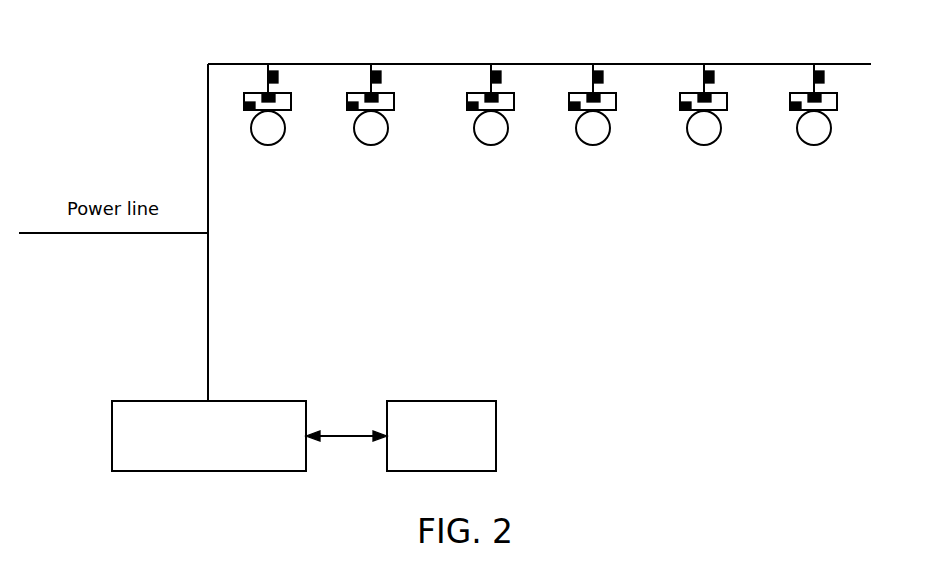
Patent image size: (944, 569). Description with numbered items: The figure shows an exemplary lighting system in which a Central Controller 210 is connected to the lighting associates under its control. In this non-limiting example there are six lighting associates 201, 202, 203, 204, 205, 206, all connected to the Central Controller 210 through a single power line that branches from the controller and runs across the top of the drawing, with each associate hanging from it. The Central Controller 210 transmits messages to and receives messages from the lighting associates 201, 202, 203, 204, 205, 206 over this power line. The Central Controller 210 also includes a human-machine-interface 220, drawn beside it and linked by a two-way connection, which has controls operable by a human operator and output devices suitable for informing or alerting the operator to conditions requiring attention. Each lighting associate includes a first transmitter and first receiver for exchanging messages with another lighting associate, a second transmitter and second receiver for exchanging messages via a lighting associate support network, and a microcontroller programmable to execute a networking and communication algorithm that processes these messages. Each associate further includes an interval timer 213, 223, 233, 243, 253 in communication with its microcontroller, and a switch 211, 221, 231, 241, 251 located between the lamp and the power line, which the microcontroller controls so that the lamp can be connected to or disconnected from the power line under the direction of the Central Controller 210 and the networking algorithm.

The lighting associate 201 is at (292, 104).
The lighting associate 202 is at (395, 105).
The lighting associate 203 is at (514, 100).
The lighting associate 204 is at (616, 105).
The lighting associate 205 is at (728, 106).
The lighting associate 206 is at (838, 106).
The switch 211 is at (270, 63).
The switch 221 is at (372, 63).
The switch 231 is at (595, 63).
The switch 241 is at (708, 63).
The switch 251 is at (819, 63).
The interval timer 213 is at (249, 112).
The interval timer 223 is at (350, 112).
The interval timer 233 is at (569, 112).
The interval timer 243 is at (683, 112).
The interval timer 253 is at (792, 112).
The Central Controller 210 is at (150, 399).
The human-machine-interface 220 is at (497, 432).